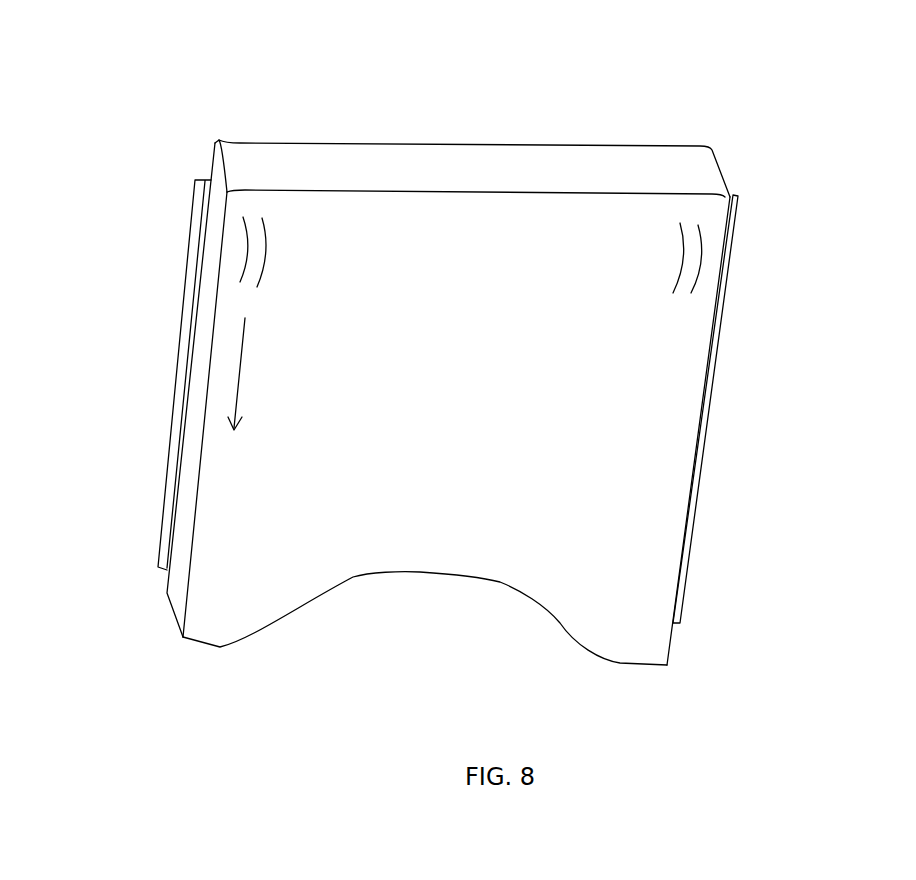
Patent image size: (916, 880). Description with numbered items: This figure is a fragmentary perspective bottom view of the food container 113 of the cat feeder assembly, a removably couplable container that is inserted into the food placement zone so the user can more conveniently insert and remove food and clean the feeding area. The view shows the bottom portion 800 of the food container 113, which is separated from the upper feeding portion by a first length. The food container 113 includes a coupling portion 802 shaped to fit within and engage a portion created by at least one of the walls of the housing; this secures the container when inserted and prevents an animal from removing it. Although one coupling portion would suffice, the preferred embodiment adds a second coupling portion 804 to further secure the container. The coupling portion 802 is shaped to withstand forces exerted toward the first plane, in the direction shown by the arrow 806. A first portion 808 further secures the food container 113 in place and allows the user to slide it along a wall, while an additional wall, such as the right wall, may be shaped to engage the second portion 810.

The bottom portion 800 is at (660, 410).
The food container 113 is at (517, 168).
The coupling portion 802 is at (250, 257).
The second coupling portion 804 is at (697, 253).
The arrow 806 is at (238, 373).
The first portion 808 is at (200, 197).
The second portion 810 is at (733, 186).